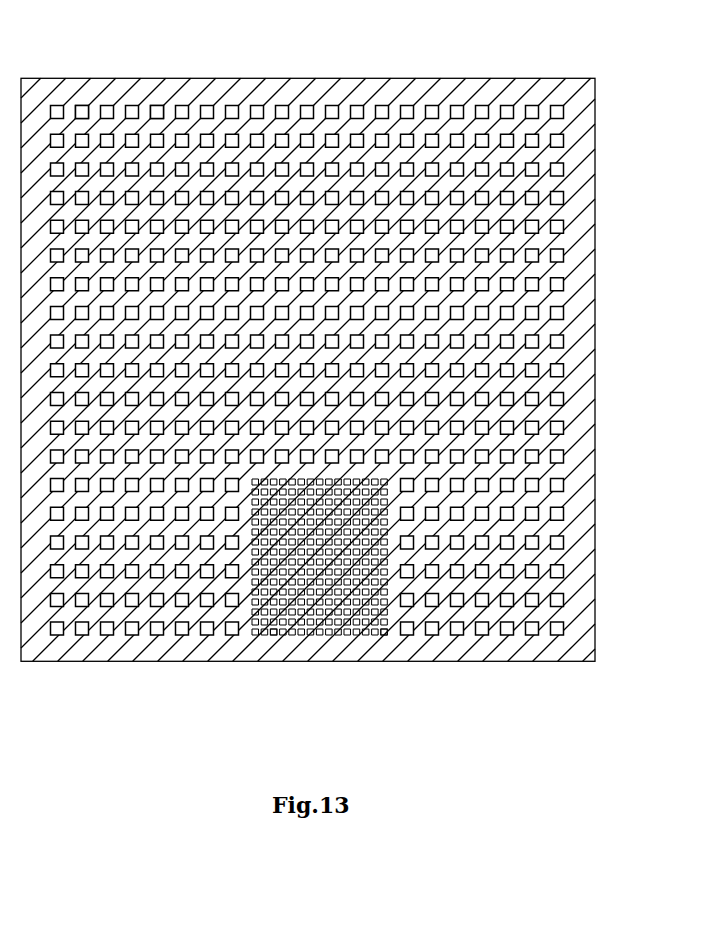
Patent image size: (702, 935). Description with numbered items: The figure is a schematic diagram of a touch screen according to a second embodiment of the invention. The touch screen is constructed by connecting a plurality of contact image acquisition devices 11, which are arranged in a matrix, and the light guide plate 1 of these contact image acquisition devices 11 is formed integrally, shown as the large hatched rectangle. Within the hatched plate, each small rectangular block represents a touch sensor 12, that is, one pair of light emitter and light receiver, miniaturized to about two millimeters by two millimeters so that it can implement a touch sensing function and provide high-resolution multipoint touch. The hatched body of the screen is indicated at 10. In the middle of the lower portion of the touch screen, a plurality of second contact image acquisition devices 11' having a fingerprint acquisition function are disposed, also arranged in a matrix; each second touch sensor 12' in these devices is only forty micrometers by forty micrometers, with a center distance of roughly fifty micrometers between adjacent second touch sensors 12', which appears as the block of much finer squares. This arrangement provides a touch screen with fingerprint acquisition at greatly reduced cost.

The light guide plate 1 is at (421, 78).
The mask body 10 is at (304, 90).
The contact image acquisition device 11 is at (80, 70).
The touch sensor 12 is at (149, 69).
The second contact image acquisition device 11' is at (257, 667).
The second touch sensor 12' is at (405, 667).